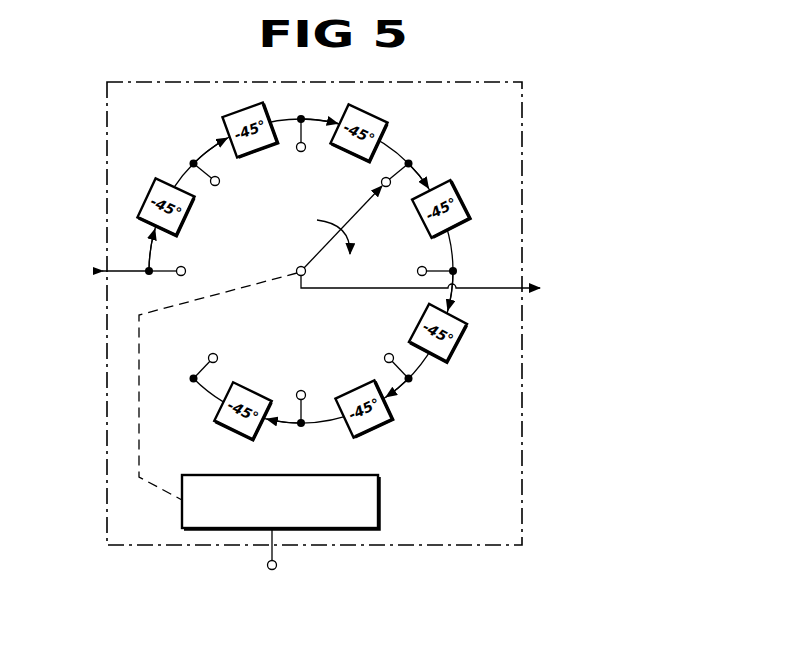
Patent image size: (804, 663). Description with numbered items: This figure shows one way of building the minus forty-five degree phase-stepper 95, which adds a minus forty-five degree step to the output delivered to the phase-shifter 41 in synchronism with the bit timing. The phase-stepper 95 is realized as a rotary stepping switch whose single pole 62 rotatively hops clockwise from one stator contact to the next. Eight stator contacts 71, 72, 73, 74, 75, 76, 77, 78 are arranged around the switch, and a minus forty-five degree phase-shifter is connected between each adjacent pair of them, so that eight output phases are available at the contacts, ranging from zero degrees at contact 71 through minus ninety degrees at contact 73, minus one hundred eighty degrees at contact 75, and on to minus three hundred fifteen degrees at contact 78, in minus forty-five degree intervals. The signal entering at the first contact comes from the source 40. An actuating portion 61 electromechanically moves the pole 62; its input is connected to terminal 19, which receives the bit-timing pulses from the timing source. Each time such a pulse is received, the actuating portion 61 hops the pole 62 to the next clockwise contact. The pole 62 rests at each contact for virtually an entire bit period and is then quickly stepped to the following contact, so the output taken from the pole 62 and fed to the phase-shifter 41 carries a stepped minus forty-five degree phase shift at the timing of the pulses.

The terminal 19 is at (268, 564).
The source 40 is at (94, 272).
The phase-shifter 41 is at (468, 290).
The actuating portion 61 is at (318, 523).
The pole 62 is at (358, 212).
The stator contact 71 is at (186, 272).
The stator contact 72 is at (219, 183).
The stator contact 73 is at (297, 150).
The stator contact 74 is at (388, 187).
The stator contact 75 is at (417, 272).
The stator contact 76 is at (385, 360).
The stator contact 77 is at (298, 392).
The stator contact 78 is at (211, 355).
The phase-stepper 95 is at (458, 531).